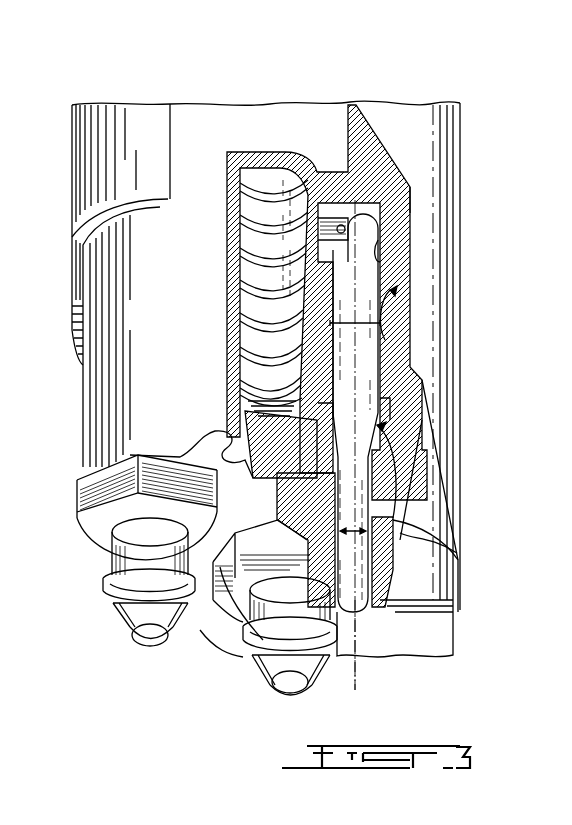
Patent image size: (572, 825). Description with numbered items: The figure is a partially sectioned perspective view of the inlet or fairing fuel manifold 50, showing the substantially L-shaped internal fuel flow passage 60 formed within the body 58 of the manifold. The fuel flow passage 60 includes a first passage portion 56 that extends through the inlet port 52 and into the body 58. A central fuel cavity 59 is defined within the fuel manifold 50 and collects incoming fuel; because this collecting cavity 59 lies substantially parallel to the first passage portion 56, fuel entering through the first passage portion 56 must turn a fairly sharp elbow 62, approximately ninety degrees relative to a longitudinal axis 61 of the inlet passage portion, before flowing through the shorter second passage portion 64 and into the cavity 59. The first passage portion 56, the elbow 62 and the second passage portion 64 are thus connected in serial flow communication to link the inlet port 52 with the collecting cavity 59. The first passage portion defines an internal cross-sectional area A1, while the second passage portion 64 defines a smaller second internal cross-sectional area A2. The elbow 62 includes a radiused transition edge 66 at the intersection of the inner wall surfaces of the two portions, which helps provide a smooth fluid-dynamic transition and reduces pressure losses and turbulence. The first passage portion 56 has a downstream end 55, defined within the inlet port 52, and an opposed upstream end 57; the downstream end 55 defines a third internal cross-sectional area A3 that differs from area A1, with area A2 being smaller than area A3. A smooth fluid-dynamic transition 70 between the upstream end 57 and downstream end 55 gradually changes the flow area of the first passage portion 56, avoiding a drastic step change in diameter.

The fuel manifold 50 is at (472, 112).
The inlet port 52 is at (420, 540).
The downstream end 55 is at (240, 265).
The first passage portion 56 is at (410, 363).
The upstream end 57 is at (243, 652).
The body 58 is at (422, 380).
The central fuel cavity 59 is at (290, 203).
The fuel flow passage 60 is at (410, 288).
The longitudinal axis 61 is at (358, 638).
The elbow 62 is at (410, 207).
The second passage portion 64 is at (390, 212).
The radiused transition edge 66 is at (410, 266).
The fluid-dynamic transition 70 is at (422, 420).
The first internal cross-sectional area A1 is at (410, 314).
The second internal cross-sectional area A2 is at (410, 243).
The third internal cross-sectional area A3 is at (400, 521).